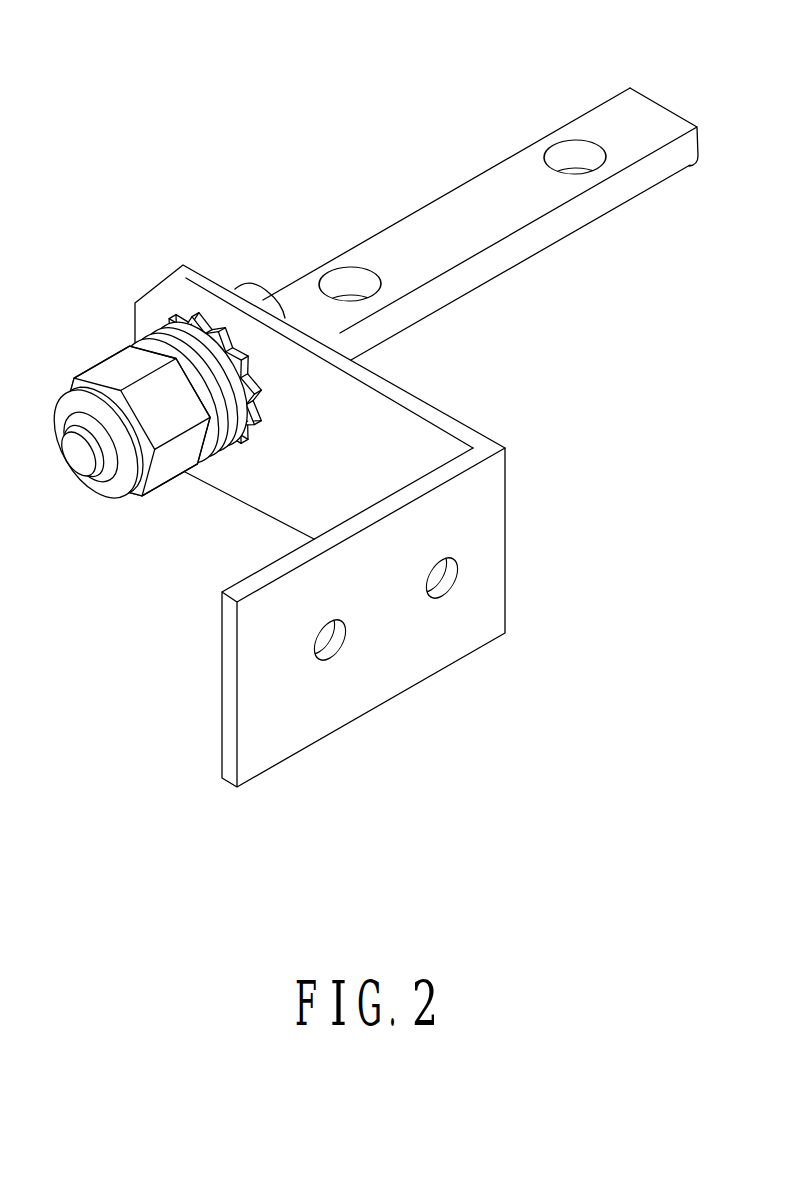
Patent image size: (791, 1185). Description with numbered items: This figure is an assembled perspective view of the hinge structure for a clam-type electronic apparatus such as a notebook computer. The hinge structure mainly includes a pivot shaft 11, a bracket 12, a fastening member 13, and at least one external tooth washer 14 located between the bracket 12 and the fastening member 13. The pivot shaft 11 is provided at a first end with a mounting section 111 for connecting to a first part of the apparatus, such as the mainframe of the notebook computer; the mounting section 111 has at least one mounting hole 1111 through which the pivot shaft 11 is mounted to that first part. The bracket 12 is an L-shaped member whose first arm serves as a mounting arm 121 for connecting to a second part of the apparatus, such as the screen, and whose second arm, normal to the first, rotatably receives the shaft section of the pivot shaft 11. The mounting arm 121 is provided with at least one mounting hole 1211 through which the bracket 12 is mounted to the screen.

The pivot shaft 11 is at (416, 128).
The mounting section 111 is at (470, 222).
The mounting holes 1111 is at (577, 157).
The bracket 12 is at (502, 715).
The mounting arm 121 is at (478, 523).
The mounting hole 1211 is at (445, 588).
The fastening member 13 is at (110, 365).
The external tooth washer 14 is at (202, 323).